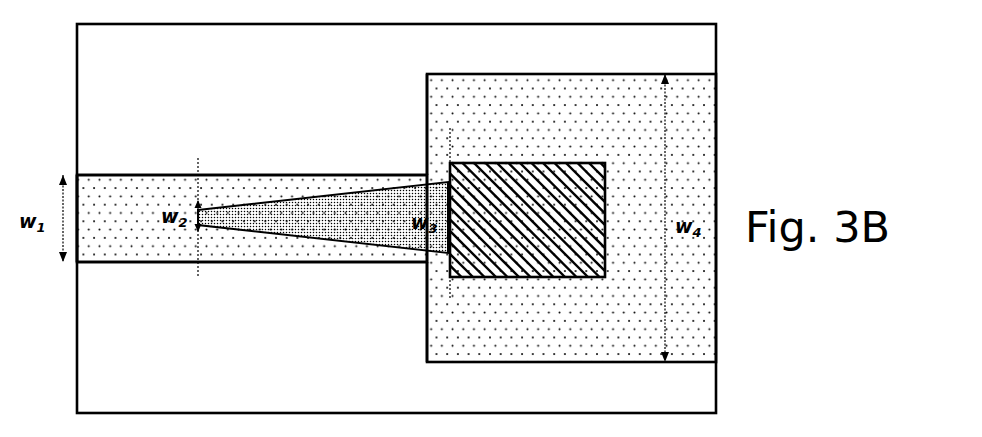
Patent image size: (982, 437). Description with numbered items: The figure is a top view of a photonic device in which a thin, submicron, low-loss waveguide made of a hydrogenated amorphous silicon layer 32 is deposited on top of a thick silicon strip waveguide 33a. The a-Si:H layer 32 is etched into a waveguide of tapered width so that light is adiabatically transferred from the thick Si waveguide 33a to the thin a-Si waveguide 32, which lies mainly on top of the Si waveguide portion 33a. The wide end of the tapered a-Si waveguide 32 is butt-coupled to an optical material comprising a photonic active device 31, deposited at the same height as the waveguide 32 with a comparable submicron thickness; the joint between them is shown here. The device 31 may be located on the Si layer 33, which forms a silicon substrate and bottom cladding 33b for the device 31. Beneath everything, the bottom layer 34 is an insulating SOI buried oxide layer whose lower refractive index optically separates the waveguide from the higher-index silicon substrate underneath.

The photonic active device 31 is at (477, 278).
The hydrogenated amorphous silicon layer 32 is at (365, 215).
The Si layer 33 is at (367, 272).
The Si strip waveguide 33a is at (175, 255).
The bottom cladding 33b is at (693, 307).
The BOX layer 34 is at (223, 107).